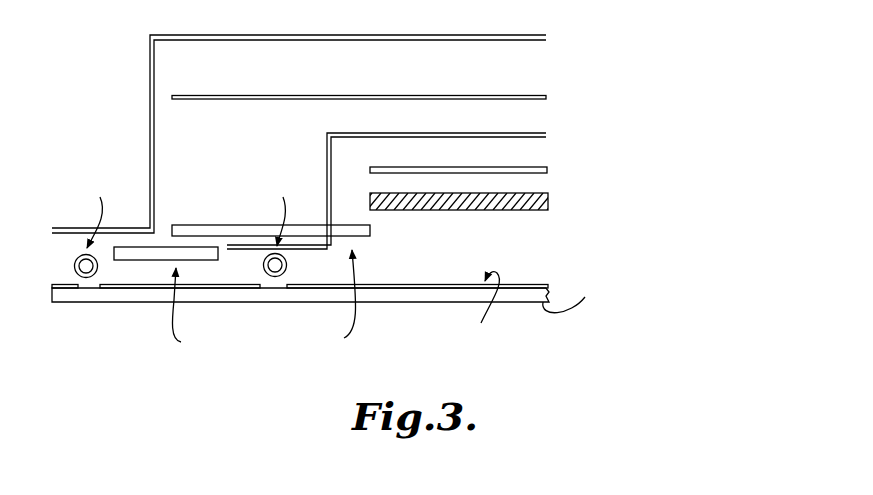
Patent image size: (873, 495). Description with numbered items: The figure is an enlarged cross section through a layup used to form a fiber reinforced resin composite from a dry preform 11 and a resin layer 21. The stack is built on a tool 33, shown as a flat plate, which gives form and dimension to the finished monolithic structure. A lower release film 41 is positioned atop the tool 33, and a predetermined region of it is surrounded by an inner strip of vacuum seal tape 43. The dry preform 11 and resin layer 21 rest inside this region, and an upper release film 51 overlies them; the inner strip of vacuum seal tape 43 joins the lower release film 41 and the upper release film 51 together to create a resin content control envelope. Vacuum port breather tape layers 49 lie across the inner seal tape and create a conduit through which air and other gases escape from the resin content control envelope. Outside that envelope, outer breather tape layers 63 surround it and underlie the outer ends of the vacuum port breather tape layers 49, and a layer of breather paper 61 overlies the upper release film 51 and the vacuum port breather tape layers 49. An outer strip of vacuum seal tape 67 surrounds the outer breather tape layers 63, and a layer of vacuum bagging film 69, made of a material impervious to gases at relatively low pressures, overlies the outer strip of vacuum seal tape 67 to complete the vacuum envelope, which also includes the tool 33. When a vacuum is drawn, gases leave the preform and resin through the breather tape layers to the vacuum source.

The vacuum bagging film 69 is at (395, 36).
The breather paper 61 is at (232, 96).
The upper release film 51 is at (432, 133).
The resin layer 21 is at (432, 168).
The dry preform 11 is at (516, 212).
The vacuum port breather tape layers 49 is at (372, 232).
The inner strip of vacuum seal tape 43 is at (287, 262).
The outer strip of vacuum seal tape 67 is at (75, 262).
The outer breather tape layers 63 is at (194, 262).
The lower release film 41 is at (408, 288).
The tool 33 is at (78, 303).